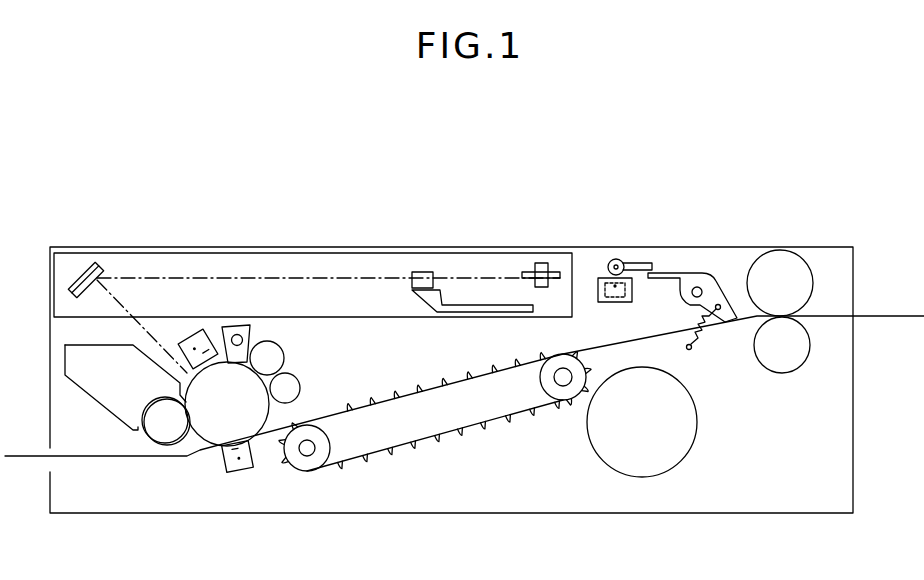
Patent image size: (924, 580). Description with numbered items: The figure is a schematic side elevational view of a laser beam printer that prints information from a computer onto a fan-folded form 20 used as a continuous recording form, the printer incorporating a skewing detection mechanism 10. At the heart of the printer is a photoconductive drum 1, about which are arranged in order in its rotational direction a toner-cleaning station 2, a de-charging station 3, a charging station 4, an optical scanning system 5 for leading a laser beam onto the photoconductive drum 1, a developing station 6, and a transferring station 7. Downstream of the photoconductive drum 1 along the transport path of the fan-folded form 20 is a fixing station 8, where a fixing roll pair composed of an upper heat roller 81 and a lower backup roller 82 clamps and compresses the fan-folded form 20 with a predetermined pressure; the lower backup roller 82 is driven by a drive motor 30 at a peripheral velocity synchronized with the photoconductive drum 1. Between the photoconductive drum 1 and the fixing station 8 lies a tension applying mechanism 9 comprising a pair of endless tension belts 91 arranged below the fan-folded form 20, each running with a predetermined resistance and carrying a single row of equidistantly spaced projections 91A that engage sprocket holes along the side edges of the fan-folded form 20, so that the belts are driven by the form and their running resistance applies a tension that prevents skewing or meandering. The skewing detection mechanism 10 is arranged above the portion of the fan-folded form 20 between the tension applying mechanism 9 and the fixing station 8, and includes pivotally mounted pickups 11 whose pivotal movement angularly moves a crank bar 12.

The photoconductive drum 1 is at (213, 432).
The toner-cleaning station 2 is at (299, 383).
The de-charging station 3 is at (240, 327).
The charging station 4 is at (200, 337).
The optical scanning system 5 is at (355, 262).
The developing station 6 is at (95, 388).
The transferring station 7 is at (243, 473).
The fixing station 8 is at (801, 269).
The upper heat roller 81 is at (785, 270).
The lower backup roller 82 is at (797, 342).
The tension applying mechanism 9 is at (435, 466).
The endless tension belts 91 is at (402, 451).
The projections 91A is at (437, 442).
The skewing detection mechanism 10 is at (667, 258).
The pickups 11 is at (692, 275).
The crank bar 12 is at (642, 260).
The fan-folded form 20 is at (25, 457).
The drive motor 30 is at (650, 467).